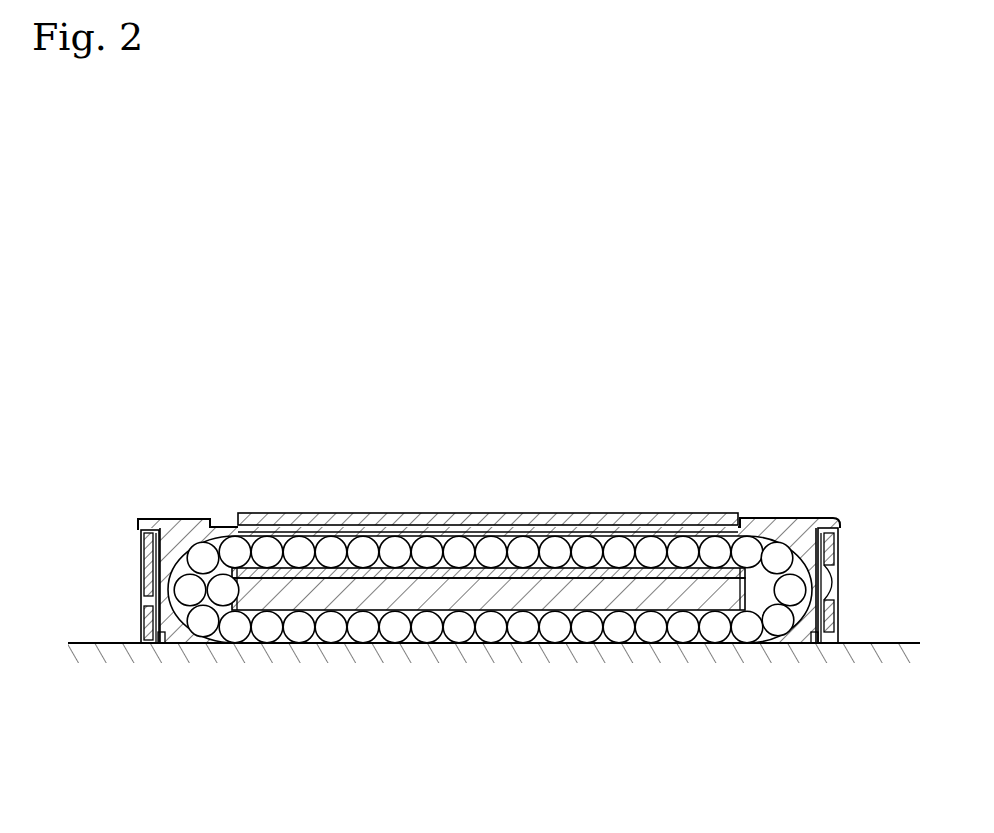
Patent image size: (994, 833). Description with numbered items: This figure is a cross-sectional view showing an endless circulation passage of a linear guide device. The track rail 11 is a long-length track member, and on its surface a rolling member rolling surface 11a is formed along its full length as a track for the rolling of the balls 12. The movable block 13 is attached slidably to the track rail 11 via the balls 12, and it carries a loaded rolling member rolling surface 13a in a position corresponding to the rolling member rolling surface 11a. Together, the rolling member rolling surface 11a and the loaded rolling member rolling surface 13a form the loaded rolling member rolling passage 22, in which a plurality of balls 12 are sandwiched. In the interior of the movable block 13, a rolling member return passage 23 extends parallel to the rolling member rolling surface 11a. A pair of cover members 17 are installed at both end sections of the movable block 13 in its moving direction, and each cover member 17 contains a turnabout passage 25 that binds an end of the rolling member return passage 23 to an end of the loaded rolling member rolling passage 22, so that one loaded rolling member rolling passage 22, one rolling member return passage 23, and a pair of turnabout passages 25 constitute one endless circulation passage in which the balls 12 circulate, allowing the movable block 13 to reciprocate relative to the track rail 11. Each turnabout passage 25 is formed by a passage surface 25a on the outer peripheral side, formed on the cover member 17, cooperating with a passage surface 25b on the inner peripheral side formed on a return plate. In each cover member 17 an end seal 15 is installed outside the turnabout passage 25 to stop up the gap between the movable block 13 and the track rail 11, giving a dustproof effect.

The track rail 11 is at (494, 678).
The rolling member rolling surface 11a is at (343, 645).
The balls 12 is at (523, 632).
The movable block 13 is at (728, 510).
The loaded rolling member rolling surface 13a is at (425, 613).
The end seal 15 is at (142, 604).
The cover member 17 is at (168, 518).
The loaded rolling member rolling passage 22 is at (488, 660).
The rolling member return passage 23 is at (478, 537).
The turnabout passage 25 is at (491, 602).
The passage surface on the outer peripheral side 25a is at (143, 560).
The passage surface on the inner peripheral side 25b is at (181, 645).